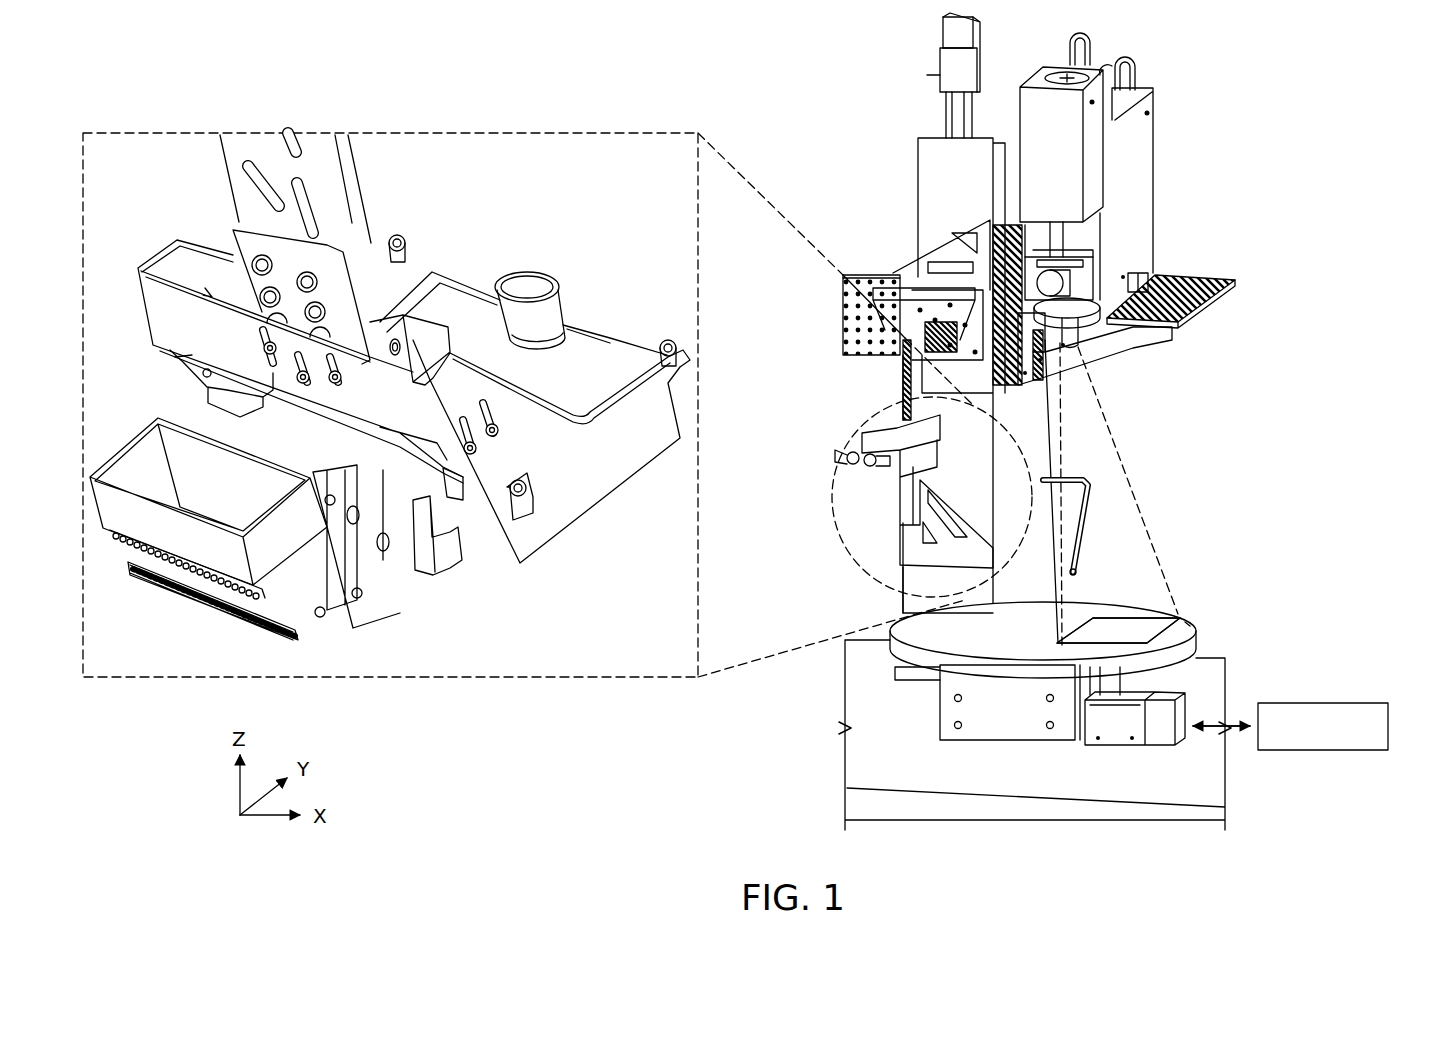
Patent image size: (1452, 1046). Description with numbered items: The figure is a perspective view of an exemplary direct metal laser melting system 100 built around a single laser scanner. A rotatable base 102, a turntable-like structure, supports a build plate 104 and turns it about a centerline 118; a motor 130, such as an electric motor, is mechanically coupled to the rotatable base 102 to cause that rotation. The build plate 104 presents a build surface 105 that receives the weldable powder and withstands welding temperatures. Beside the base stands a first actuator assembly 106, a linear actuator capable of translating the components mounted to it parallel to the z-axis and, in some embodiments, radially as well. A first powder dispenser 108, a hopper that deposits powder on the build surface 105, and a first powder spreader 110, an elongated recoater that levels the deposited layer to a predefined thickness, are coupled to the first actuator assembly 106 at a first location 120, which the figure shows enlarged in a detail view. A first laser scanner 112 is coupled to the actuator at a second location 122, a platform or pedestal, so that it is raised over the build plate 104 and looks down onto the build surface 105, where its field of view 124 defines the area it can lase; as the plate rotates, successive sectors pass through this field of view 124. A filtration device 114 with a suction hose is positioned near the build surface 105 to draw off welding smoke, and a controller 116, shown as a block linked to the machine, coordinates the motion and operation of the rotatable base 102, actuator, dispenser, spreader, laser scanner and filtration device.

The direct metal laser melting system 100 is at (1285, 72).
The rotatable base 102 is at (938, 685).
The build plate 104 is at (1198, 643).
The build surface 105 is at (1190, 624).
The first actuator assembly 106 is at (940, 30).
The first powder dispenser 108 is at (196, 590).
The first powder spreader 110 is at (437, 580).
The first laser scanner 112 is at (1155, 145).
The filtration device 114 is at (1090, 515).
The controller 116 is at (1390, 727).
The centerline 118 is at (1064, 425).
The first location 120 is at (895, 488).
The second location 122 is at (1210, 273).
The field of view 124 is at (1098, 648).
The motor 130 is at (1122, 745).